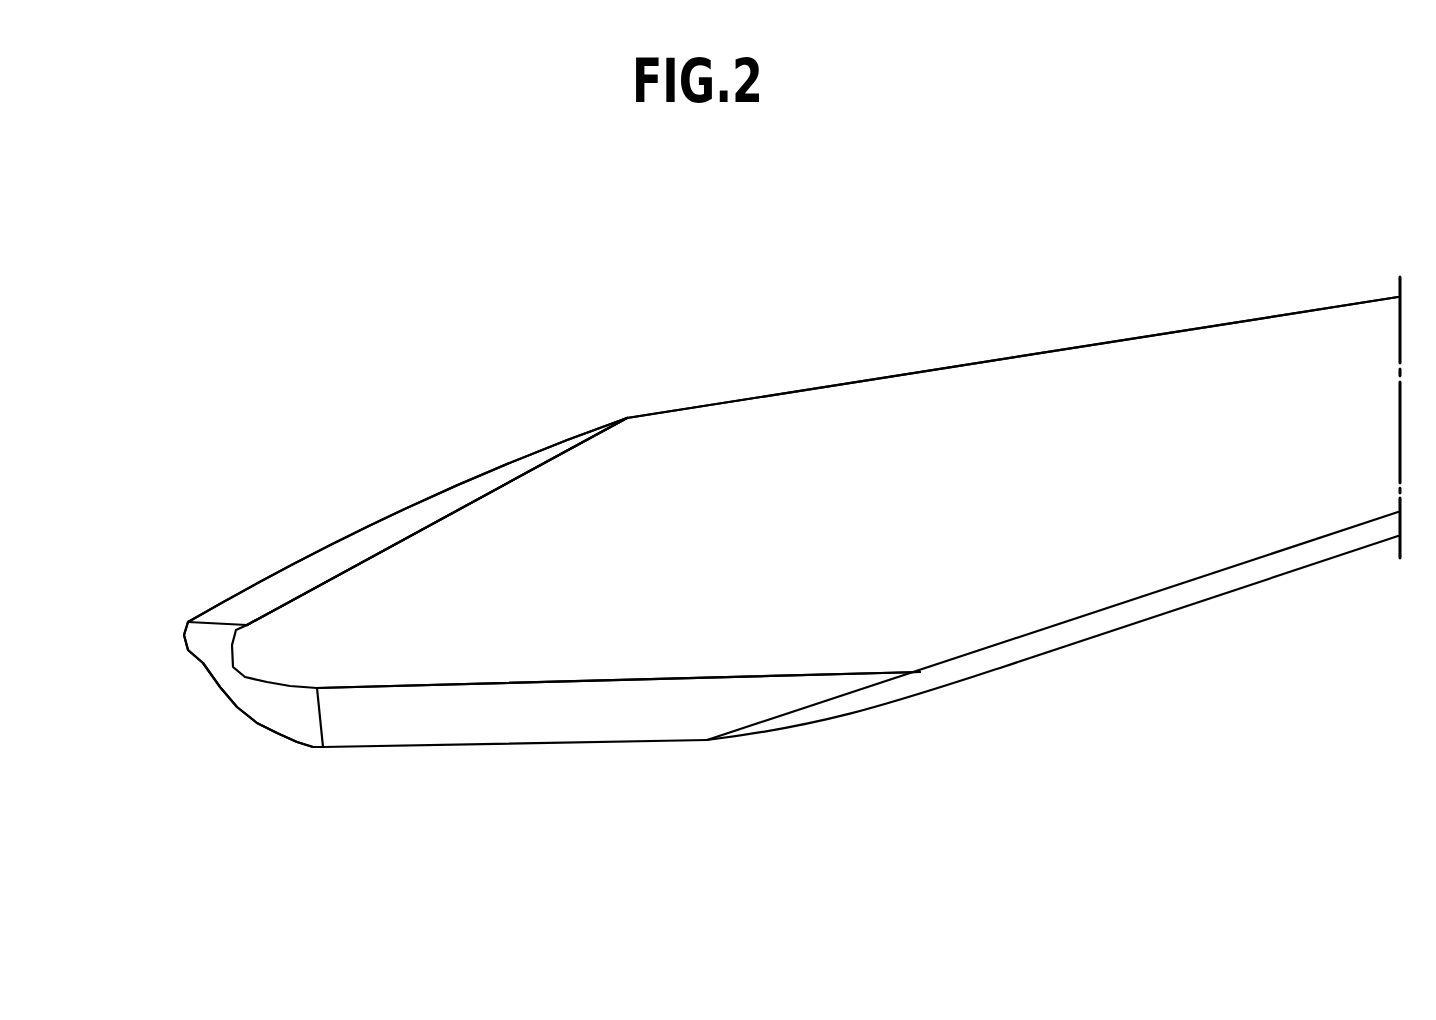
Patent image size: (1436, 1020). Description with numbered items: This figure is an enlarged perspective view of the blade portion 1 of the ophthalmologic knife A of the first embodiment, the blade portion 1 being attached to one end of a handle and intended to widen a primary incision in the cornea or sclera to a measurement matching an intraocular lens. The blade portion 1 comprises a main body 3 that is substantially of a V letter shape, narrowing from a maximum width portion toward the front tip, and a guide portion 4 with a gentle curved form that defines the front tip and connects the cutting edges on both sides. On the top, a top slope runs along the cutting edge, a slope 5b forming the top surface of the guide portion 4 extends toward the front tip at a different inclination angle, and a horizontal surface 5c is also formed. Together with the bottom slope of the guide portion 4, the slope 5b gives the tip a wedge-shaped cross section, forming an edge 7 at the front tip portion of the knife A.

The blade portion 1 is at (768, 362).
The main body 3 is at (590, 490).
The guide portion 4 is at (238, 724).
The slope 5b is at (310, 728).
The horizontal surface 5c is at (912, 408).
The edge 7 is at (275, 730).
The knife A is at (1233, 353).